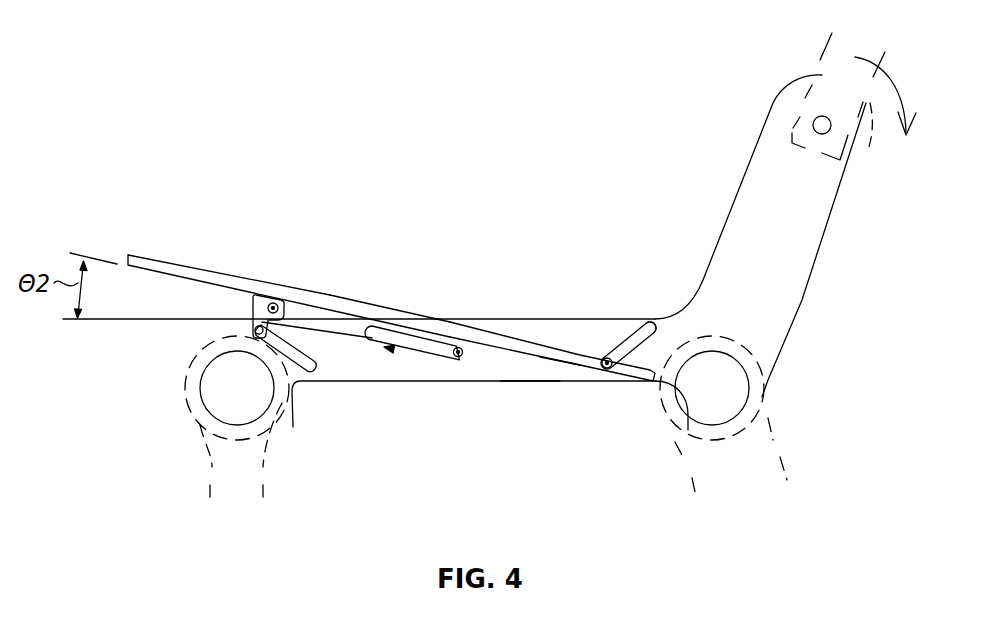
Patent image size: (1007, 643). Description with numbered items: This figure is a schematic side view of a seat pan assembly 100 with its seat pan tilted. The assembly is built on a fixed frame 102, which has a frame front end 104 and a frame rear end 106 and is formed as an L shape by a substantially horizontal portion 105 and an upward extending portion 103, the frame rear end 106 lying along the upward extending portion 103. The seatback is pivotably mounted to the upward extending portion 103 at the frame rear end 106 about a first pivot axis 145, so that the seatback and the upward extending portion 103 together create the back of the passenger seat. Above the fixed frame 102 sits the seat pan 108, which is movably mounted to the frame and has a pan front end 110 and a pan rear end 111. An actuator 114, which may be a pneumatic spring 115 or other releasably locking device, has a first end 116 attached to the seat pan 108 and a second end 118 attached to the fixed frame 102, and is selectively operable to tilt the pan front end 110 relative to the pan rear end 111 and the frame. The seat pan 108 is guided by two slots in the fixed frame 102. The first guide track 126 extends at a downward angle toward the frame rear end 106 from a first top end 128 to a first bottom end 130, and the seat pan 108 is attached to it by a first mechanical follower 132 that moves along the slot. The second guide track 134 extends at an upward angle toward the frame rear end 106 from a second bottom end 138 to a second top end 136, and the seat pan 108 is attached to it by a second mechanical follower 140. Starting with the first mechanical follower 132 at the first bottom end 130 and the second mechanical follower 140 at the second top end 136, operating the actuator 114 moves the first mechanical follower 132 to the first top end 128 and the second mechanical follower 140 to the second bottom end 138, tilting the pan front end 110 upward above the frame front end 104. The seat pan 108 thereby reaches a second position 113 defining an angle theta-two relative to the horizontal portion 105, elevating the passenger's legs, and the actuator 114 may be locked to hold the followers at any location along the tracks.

The seat pan assembly 100 is at (172, 72).
The fixed frame 102 is at (561, 363).
The upward extending portion 103 is at (808, 248).
The frame front end 104 is at (240, 323).
The horizontal portion 105 is at (523, 366).
The frame rear end 106 is at (778, 308).
The seat pan 108 is at (405, 312).
The pan front end 110 is at (128, 254).
The pan rear end 111 is at (688, 430).
The second position 113 is at (213, 273).
The actuator 114 is at (360, 332).
The pneumatic spring 115 is at (391, 350).
The first end 116 is at (280, 303).
The second end 118 is at (462, 356).
The first guide track 126 is at (293, 427).
The first top end 128 is at (257, 327).
The first bottom end 130 is at (313, 371).
The first mechanical follower 132 is at (273, 304).
The second guide track 134 is at (627, 342).
The second top end 136 is at (648, 325).
The second bottom end 138 is at (614, 370).
The second mechanical follower 140 is at (595, 378).
The first pivot axis 145 is at (831, 126).